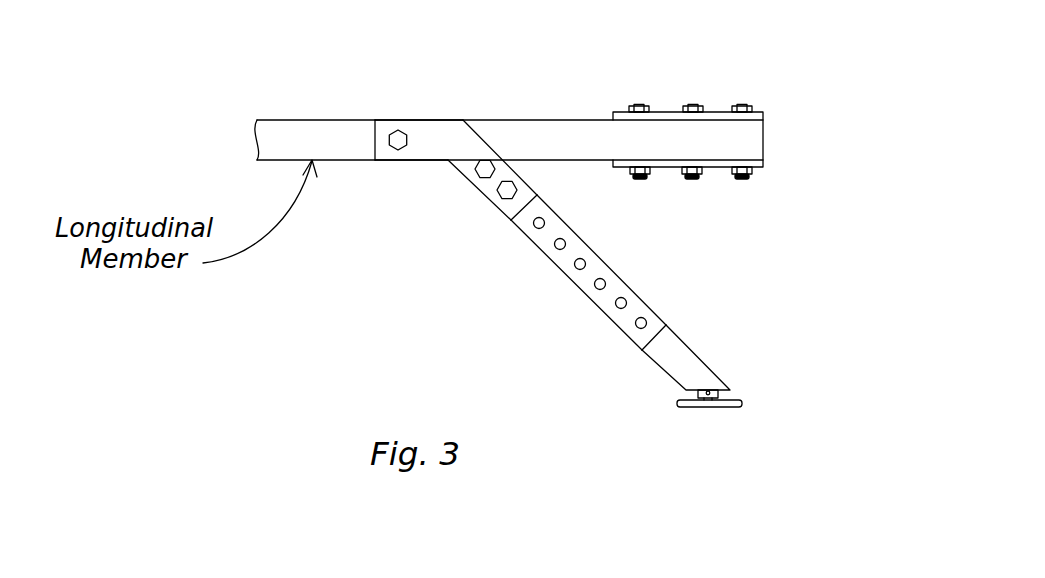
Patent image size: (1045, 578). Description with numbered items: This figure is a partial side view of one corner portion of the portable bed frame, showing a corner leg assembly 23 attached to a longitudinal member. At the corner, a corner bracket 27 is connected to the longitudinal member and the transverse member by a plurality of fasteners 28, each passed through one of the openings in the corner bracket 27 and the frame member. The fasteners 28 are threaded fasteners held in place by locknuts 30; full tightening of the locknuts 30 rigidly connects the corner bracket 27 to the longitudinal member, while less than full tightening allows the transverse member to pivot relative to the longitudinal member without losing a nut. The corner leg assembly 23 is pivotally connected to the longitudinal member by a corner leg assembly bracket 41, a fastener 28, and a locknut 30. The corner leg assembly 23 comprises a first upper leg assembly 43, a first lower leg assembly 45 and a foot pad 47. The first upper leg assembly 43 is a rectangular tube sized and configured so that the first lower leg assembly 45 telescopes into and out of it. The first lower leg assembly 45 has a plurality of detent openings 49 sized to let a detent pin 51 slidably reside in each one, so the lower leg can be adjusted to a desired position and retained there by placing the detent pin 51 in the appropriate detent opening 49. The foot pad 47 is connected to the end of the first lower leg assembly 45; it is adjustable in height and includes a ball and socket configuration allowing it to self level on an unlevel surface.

The corner leg assembly 23 is at (518, 328).
The corner bracket 27 is at (618, 111).
The fastener 28 is at (397, 129).
The locknut 30 is at (650, 175).
The corner leg assembly bracket 41 is at (437, 148).
The first upper leg assembly 43 is at (520, 232).
The first lower leg assembly 45 is at (661, 366).
The foot pad 47 is at (708, 408).
The detent opening 49 is at (646, 321).
The detent pin 51 is at (536, 228).